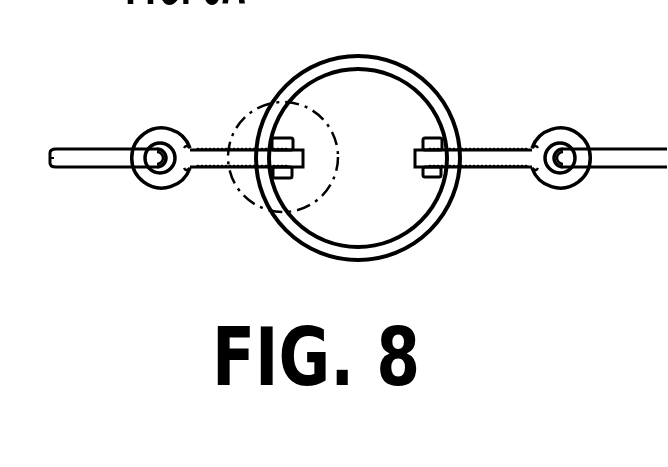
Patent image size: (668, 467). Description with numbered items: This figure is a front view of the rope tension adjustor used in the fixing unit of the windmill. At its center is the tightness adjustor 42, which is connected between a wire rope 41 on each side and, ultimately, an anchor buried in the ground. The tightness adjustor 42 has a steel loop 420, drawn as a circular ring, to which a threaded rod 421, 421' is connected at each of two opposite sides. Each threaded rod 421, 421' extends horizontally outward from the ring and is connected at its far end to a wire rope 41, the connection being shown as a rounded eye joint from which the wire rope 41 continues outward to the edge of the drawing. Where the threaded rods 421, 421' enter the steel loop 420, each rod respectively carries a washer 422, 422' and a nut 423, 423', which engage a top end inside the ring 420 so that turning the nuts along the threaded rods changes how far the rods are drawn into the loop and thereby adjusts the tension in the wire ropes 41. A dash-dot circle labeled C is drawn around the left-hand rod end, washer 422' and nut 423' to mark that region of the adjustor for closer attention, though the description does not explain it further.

The wire rope 41 is at (102, 161).
The tightness adjustor 42 is at (320, 50).
The steel loop 420 is at (405, 72).
The threaded rod 421 is at (473, 185).
The threaded rod 421' is at (235, 191).
The washer 422 is at (465, 122).
The washer 422' is at (231, 111).
The nut 423 is at (454, 219).
The nut 423' is at (266, 220).
The detail circle C is at (265, 100).